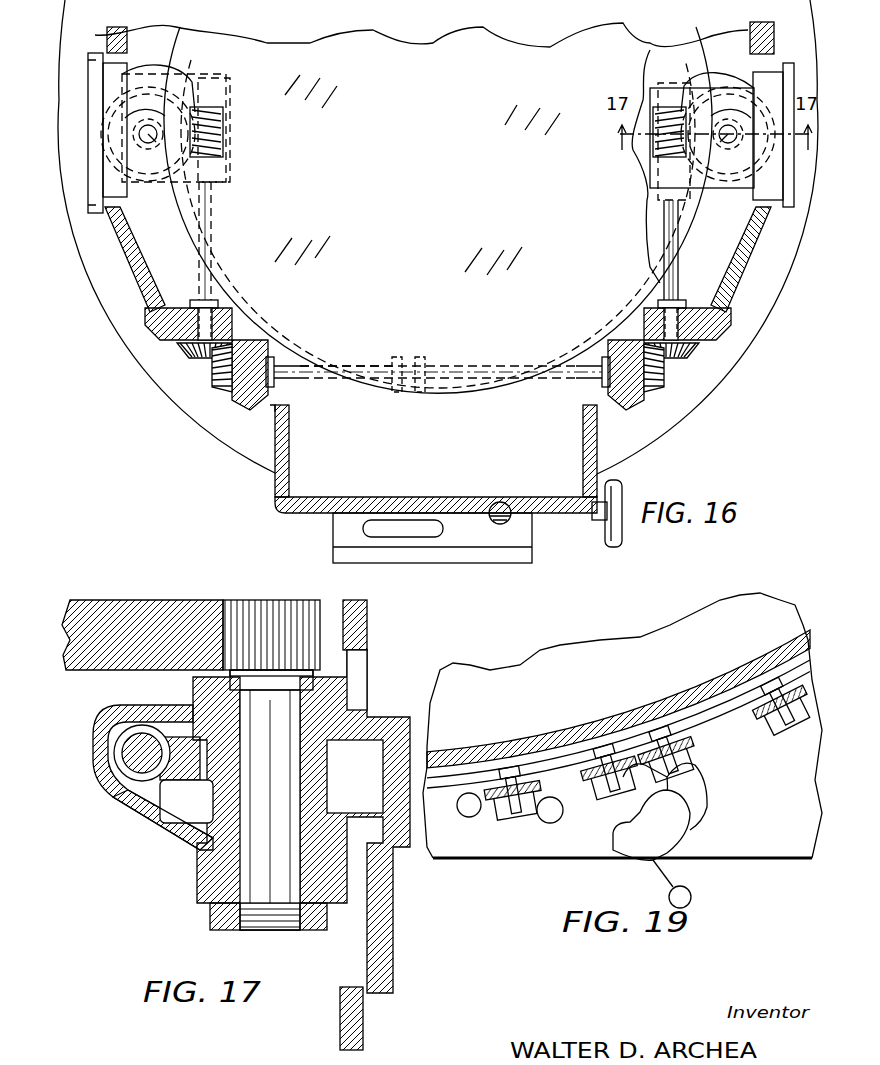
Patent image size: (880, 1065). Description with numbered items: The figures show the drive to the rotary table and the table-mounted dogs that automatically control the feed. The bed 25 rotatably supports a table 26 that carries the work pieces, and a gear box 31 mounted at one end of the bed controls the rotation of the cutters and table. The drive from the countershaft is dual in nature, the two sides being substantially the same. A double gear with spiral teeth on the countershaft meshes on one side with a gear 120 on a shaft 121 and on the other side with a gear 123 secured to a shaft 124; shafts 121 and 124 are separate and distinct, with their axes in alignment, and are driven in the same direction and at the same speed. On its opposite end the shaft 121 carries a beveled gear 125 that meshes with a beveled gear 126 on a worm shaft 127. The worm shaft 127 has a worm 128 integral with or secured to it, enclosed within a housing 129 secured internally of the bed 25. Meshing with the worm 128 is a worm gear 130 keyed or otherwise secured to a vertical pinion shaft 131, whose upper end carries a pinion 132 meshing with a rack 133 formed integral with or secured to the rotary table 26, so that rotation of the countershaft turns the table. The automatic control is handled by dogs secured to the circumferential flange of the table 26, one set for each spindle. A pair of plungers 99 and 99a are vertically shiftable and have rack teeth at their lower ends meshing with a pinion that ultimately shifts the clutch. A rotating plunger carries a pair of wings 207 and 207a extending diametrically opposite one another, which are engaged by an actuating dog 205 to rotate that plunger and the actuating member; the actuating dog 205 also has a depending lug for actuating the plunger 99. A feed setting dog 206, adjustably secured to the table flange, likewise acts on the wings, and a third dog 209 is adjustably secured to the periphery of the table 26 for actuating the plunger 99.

In FIG. 16, the bed 25 is at (100, 290).
In FIG. 17, the bed 25 is at (364, 1020).
In FIG. 16, the table 26 is at (357, 45).
In FIG. 17, the table 26 is at (135, 626).
In FIG. 19, the table 26 is at (699, 692).
In FIG. 19, the gear box 31 is at (766, 860).
In FIG. 19, the plunger 99 is at (470, 814).
In FIG. 19, the plunger 99a is at (553, 820).
In FIG. 16, the gear 120 is at (402, 351).
In FIG. 16, the shaft 121 is at (352, 352).
In FIG. 16, the gear 123 is at (420, 359).
In FIG. 16, the shaft 124 is at (438, 362).
In FIG. 16, the beveled gear 125 is at (222, 386).
In FIG. 16, the beveled gear 126 is at (183, 350).
In FIG. 16, the worm shaft 127 is at (199, 286).
In FIG. 16, the worm 128 is at (223, 133).
In FIG. 17, the worm 128 is at (123, 793).
In FIG. 16, the housing 129 is at (226, 176).
In FIG. 17, the housing 129 is at (221, 800).
In FIG. 16, the worm gear 130 is at (150, 92).
In FIG. 17, the worm gear 130 is at (200, 777).
In FIG. 16, the vertical pinion shaft 131 is at (140, 136).
In FIG. 17, the vertical pinion shaft 131 is at (282, 818).
In FIG. 16, the pinion 132 is at (92, 106).
In FIG. 17, the pinion 132 is at (293, 618).
In FIG. 17, the rack 133 is at (226, 616).
In FIG. 19, the actuating dog 205 is at (582, 792).
In FIG. 19, the feed setting dog 206 is at (750, 727).
In FIG. 19, the wing 207 is at (624, 842).
In FIG. 19, the wing 207a is at (704, 798).
In FIG. 19, the third dog 209 is at (491, 823).